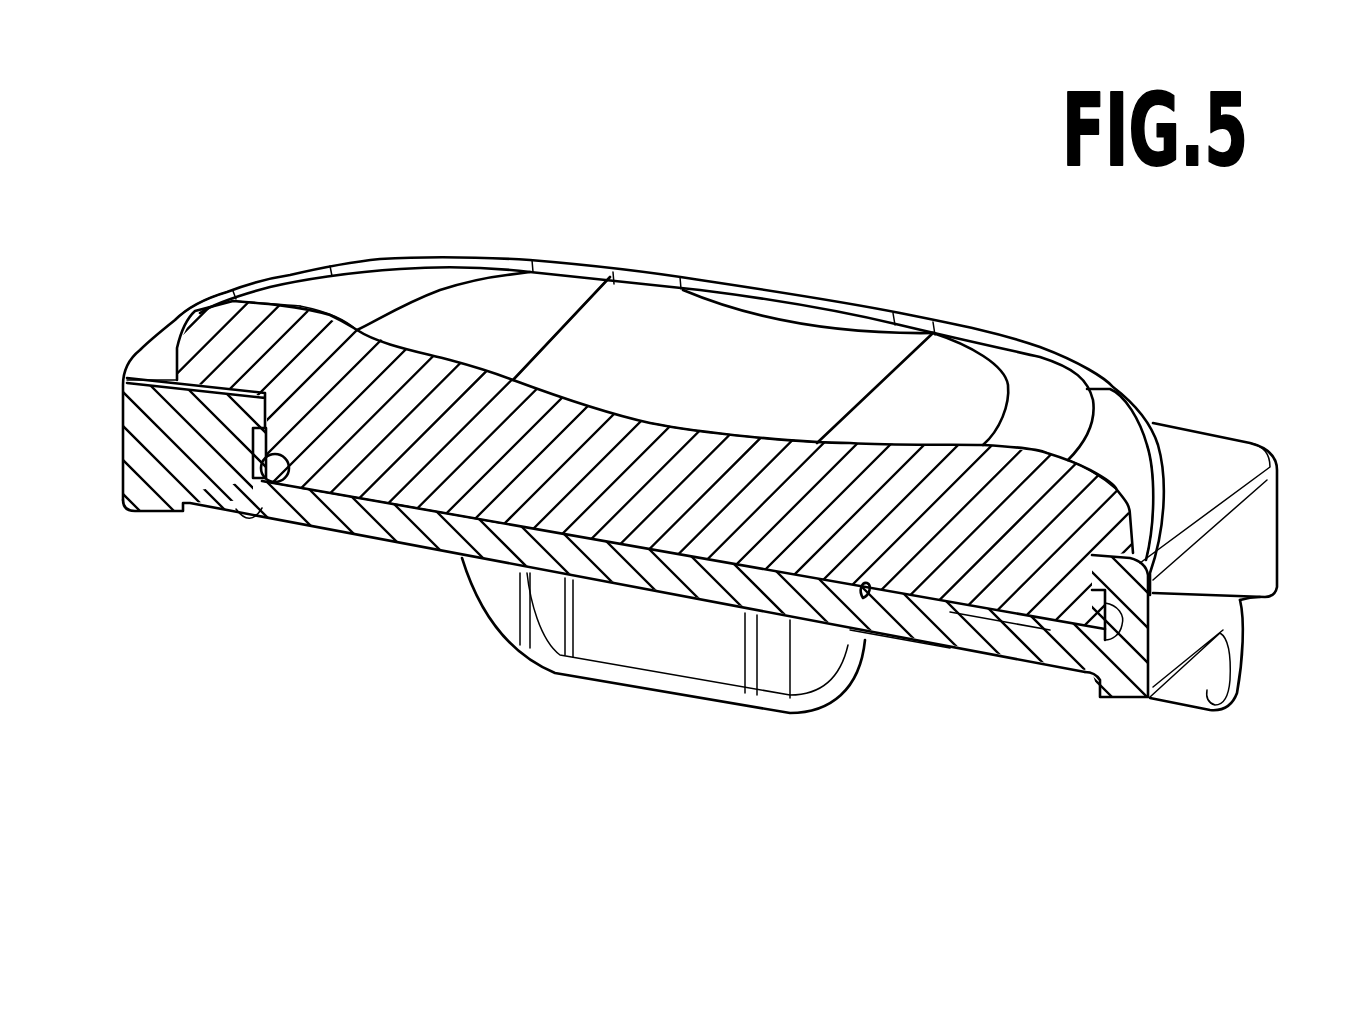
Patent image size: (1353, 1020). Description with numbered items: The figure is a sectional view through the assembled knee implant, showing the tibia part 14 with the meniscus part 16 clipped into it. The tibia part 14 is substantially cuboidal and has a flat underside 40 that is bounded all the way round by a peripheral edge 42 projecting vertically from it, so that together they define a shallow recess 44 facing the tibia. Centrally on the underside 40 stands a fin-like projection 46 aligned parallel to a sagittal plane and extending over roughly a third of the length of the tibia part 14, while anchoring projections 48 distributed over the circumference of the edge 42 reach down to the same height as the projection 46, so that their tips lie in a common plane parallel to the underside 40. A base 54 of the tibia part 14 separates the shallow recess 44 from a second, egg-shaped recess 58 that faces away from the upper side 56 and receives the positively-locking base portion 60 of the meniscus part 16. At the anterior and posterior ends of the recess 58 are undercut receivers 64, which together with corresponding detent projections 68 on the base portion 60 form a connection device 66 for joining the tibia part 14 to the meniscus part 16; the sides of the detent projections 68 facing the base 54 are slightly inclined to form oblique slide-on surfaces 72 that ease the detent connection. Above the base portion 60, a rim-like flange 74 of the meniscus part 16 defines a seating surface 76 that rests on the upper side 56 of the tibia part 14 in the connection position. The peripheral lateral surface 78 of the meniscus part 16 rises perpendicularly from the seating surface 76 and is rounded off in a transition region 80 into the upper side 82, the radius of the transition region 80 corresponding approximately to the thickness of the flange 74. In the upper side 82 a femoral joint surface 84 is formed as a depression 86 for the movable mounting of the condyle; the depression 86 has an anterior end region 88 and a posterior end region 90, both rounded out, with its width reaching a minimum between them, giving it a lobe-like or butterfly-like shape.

The tibia part 14 is at (367, 537).
The meniscus part 16 is at (603, 257).
The underside 40 is at (920, 645).
The peripheral edge 42 is at (1110, 697).
The shallow recess 44 is at (387, 540).
The fin-like projection 46 is at (620, 647).
The anchoring projection 48 is at (1200, 677).
The base 54 is at (447, 533).
The upper side 56 is at (1215, 457).
The recess 58 is at (863, 598).
The base portion 60 is at (1010, 637).
The undercut receiver 64 is at (285, 475).
The connection device 66 is at (247, 460).
The detent projection 68 is at (256, 450).
The oblique slide-on surface 72 is at (247, 482).
The rim-like flange 74 is at (1143, 490).
The seating surface 76 is at (1253, 600).
The peripheral lateral surface 78 is at (172, 365).
The transition region 80 is at (185, 315).
The upper side 82 is at (297, 307).
The femoral joint surface 84 is at (773, 370).
The depression 86 is at (543, 353).
The anterior end region 88 is at (360, 330).
The posterior end region 90 is at (988, 445).